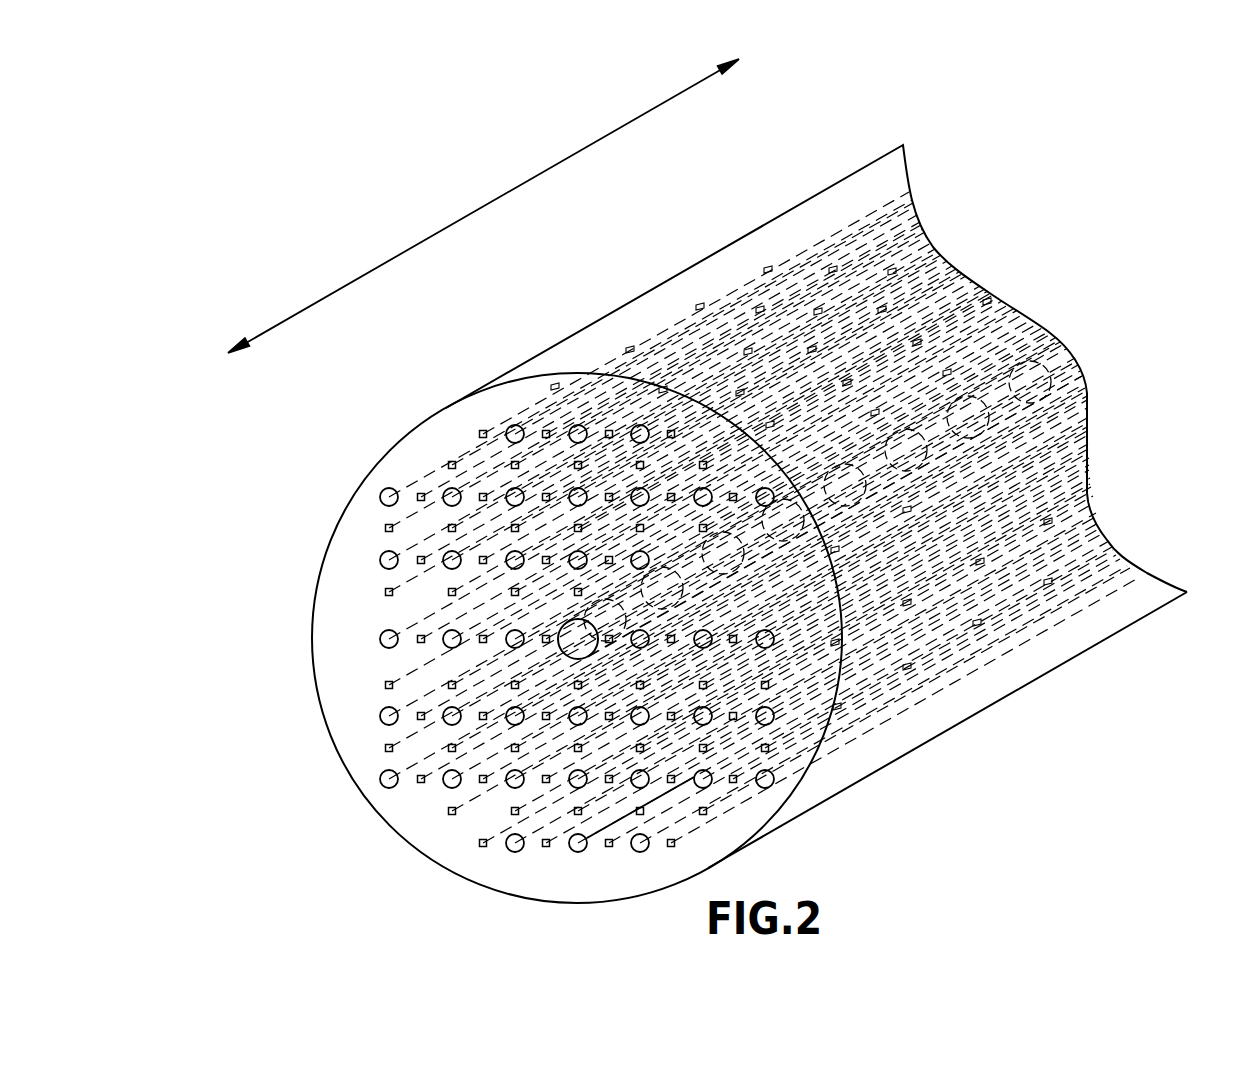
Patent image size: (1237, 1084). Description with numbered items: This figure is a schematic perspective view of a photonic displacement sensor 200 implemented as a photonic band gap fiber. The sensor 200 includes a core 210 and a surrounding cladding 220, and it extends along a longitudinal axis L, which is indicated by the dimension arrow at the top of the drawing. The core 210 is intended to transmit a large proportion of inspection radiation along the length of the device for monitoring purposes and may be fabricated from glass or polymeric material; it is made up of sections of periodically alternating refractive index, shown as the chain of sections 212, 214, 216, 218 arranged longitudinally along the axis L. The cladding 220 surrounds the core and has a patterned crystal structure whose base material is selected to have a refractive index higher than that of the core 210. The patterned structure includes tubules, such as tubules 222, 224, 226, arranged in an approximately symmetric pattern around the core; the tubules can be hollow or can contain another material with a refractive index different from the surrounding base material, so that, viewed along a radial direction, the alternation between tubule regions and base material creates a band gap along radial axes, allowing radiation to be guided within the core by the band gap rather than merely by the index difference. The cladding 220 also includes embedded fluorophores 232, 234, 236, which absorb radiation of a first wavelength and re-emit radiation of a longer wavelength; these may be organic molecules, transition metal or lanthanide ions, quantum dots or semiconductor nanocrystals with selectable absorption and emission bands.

The photonic displacement sensor 200 is at (327, 156).
The core 210 is at (1070, 360).
The section of periodically alternating refractive index 212 is at (785, 525).
The section of periodically alternating refractive index 214 is at (847, 485).
The section of periodically alternating refractive index 216 is at (908, 455).
The section of periodically alternating refractive index 218 is at (968, 420).
The cladding 220 is at (340, 577).
The tubule 222 is at (382, 641).
The tubule 224 is at (450, 790).
The tubule 226 is at (848, 744).
The fluorophore 232 is at (385, 747).
The fluorophore 234 is at (388, 522).
The fluorophore 236 is at (452, 460).